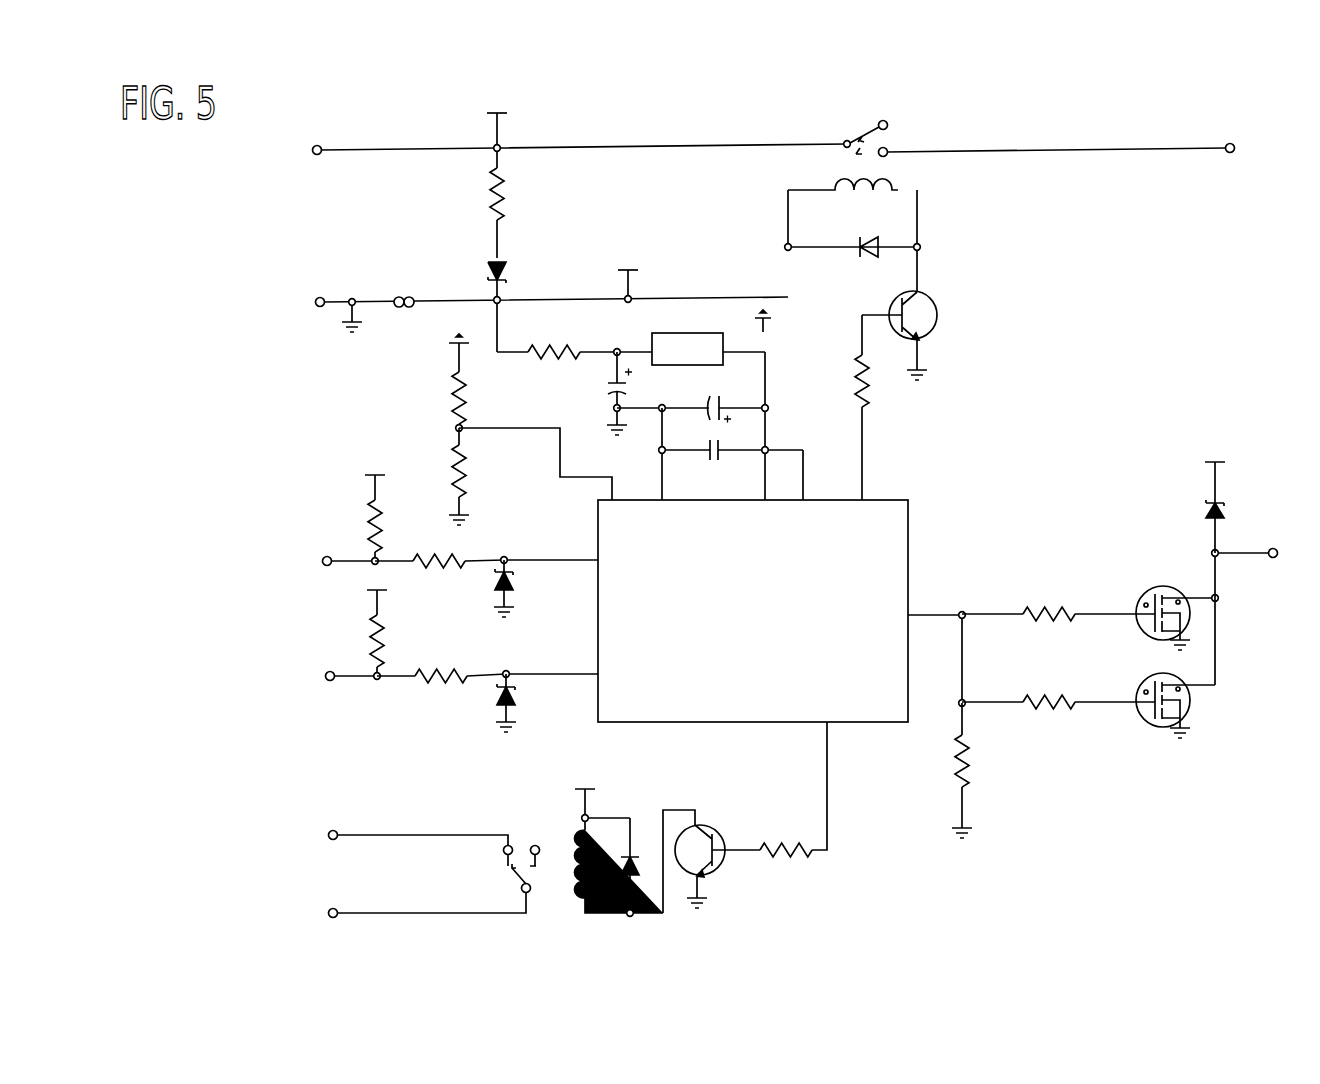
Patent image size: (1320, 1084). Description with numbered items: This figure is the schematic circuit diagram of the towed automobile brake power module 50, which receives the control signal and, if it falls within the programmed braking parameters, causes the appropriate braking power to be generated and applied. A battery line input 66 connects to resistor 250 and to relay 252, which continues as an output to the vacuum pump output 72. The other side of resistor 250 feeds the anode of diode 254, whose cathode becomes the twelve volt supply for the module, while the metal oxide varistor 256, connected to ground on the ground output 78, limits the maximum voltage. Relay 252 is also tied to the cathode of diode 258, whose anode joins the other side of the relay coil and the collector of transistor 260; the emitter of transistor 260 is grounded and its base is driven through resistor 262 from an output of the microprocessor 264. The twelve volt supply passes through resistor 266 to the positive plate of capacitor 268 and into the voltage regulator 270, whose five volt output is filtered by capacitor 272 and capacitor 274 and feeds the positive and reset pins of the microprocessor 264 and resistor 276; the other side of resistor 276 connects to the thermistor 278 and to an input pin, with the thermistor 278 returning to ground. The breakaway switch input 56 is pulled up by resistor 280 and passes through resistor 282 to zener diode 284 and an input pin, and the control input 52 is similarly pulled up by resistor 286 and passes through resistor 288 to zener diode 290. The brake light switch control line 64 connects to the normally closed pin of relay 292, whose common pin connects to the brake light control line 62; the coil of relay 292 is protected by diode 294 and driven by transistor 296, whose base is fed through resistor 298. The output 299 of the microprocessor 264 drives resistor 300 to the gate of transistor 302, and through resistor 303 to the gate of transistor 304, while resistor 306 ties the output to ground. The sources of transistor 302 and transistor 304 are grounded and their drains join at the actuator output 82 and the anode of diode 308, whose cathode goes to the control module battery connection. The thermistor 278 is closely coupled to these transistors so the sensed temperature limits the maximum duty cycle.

The towed automobile brake power module 50 is at (1276, 232).
The control input 52 is at (328, 669).
The breakaway switch input 56 is at (325, 554).
The brake light control line 62 is at (334, 906).
The brake light switch control line 64 is at (332, 828).
The battery line input 66 is at (317, 145).
The vacuum pump output 72 is at (1233, 143).
The ground output 78 is at (320, 297).
The actuator output 82 is at (1275, 547).
The resistor 250 is at (505, 190).
The relay 252 is at (866, 130).
The diode 254 is at (507, 263).
The metal oxide varistor 256 is at (405, 296).
The diode 258 is at (874, 246).
The transistor 260 is at (937, 304).
The resistor 262 is at (868, 396).
The microprocessor 264 is at (753, 611).
The resistor 266 is at (574, 349).
The capacitor 268 is at (606, 386).
The voltage regulator 270 is at (688, 332).
The capacitor 272 is at (722, 402).
The capacitor 274 is at (722, 458).
The resistor 276 is at (450, 405).
The thermistor 278 is at (466, 471).
The resistor 280 is at (372, 505).
The resistor 282 is at (433, 550).
The zener diode 284 is at (516, 587).
The resistor 286 is at (386, 626).
The resistor 288 is at (434, 667).
The zener diode 290 is at (518, 705).
The relay 292 is at (532, 844).
The diode 294 is at (632, 852).
The transistor 296 is at (722, 868).
The resistor 298 is at (788, 844).
The output 299 is at (908, 615).
The resistor 300 is at (1060, 604).
The transistor 302 is at (1152, 584).
The resistor 303 is at (1062, 694).
The transistor 304 is at (1163, 732).
The resistor 306 is at (971, 774).
The diode 308 is at (1220, 500).